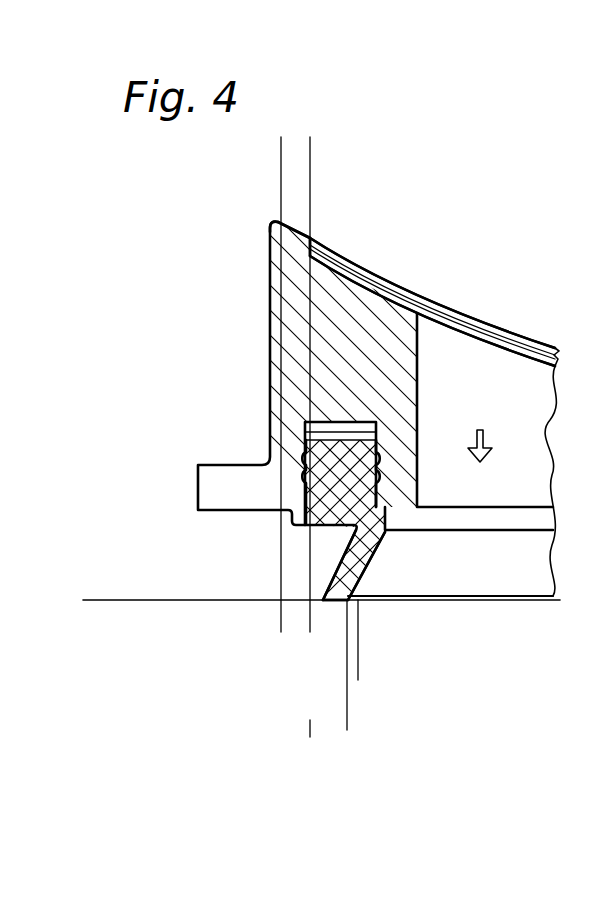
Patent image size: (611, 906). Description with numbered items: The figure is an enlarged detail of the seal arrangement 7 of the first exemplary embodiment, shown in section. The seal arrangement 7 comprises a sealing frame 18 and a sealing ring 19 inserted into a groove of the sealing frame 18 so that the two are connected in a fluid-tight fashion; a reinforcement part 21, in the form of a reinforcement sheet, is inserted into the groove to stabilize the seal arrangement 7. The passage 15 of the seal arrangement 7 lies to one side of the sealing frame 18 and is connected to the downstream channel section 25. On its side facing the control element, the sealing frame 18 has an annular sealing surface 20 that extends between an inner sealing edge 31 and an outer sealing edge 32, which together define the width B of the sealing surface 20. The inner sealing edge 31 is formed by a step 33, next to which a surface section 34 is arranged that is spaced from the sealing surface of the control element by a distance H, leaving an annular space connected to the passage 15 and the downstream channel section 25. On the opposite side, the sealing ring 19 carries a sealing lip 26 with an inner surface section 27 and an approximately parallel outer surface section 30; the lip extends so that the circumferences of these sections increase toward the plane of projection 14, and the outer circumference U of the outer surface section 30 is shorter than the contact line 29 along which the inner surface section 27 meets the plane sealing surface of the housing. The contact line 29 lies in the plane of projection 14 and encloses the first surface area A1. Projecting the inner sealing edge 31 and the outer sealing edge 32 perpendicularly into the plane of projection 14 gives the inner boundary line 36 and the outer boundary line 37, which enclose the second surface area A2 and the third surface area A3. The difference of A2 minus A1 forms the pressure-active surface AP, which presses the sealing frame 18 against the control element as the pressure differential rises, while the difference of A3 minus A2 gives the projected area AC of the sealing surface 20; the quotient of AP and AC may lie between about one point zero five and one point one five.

The seal arrangement 7 is at (147, 236).
The plane of projection 14 is at (140, 590).
The passage 15 is at (528, 428).
The sealing frame 18 is at (278, 283).
The sealing ring 19 is at (298, 462).
The annular sealing surface 20 is at (301, 224).
The reinforcement part 21 is at (323, 497).
The downstream channel section 25 is at (533, 483).
The sealing lip 26 is at (377, 553).
The inner surface section 27 is at (375, 549).
The contact line 29 is at (347, 603).
The outer surface section 30 is at (350, 541).
The inner sealing edge 31 is at (312, 237).
The outer sealing edge 32 is at (276, 220).
The step 33 is at (336, 247).
The surface section 34 is at (395, 297).
The inner boundary line 36 is at (309, 598).
The outer boundary line 37 is at (279, 603).
The first surface area A1 is at (349, 681).
The second surface area A2 is at (314, 437).
The third surface area A3 is at (263, 401).
The projected surface area of the sealing surface AC is at (311, 668).
The pressure-active surface AP is at (347, 768).
The width of the sealing surface B is at (347, 143).
The distance H is at (362, 320).
The outer circumference U is at (360, 672).